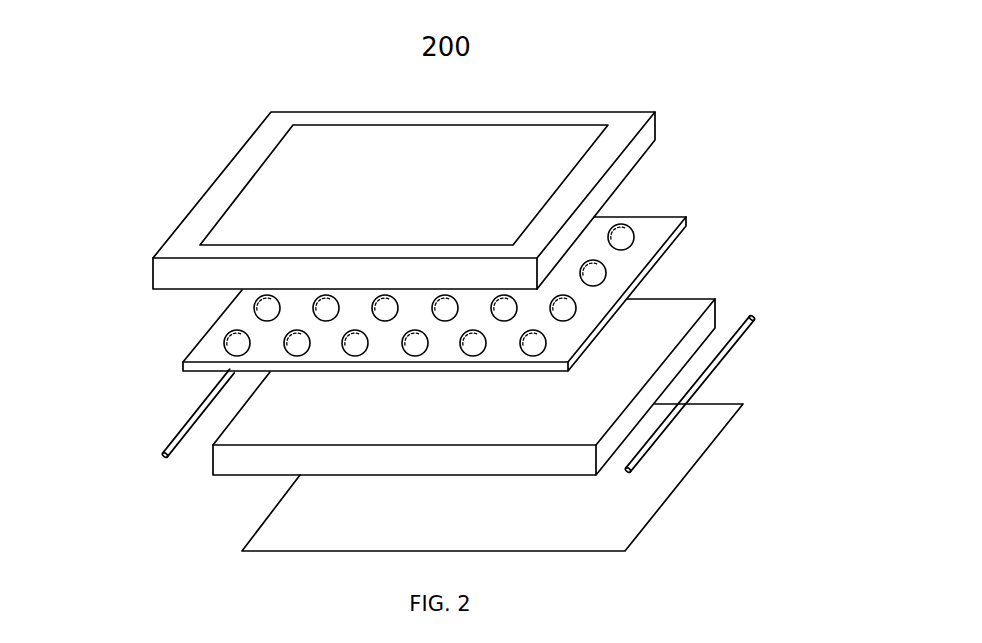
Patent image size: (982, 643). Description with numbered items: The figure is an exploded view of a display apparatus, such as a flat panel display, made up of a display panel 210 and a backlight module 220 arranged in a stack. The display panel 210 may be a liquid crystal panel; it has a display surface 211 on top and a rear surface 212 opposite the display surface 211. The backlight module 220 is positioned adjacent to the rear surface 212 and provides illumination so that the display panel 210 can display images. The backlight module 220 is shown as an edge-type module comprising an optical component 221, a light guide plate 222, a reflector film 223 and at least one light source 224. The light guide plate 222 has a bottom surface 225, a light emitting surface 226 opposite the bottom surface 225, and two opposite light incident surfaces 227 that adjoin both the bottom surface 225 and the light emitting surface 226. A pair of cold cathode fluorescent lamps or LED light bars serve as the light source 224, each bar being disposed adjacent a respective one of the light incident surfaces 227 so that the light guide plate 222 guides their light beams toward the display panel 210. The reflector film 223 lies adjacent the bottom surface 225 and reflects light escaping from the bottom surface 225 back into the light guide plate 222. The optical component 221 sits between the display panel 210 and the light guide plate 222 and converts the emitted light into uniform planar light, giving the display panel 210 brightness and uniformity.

The display panel 210 is at (422, 182).
The display surface 211 is at (627, 135).
The rear surface 212 is at (657, 167).
The backlight module 220 is at (429, 359).
The optical component 221 is at (643, 245).
The light guide plate 222 is at (672, 272).
The reflector film 223 is at (632, 518).
The light source 224 is at (187, 418).
The bottom surface 225 is at (250, 486).
The light emitting surface 226 is at (678, 308).
The light incident surface 227 is at (697, 328).